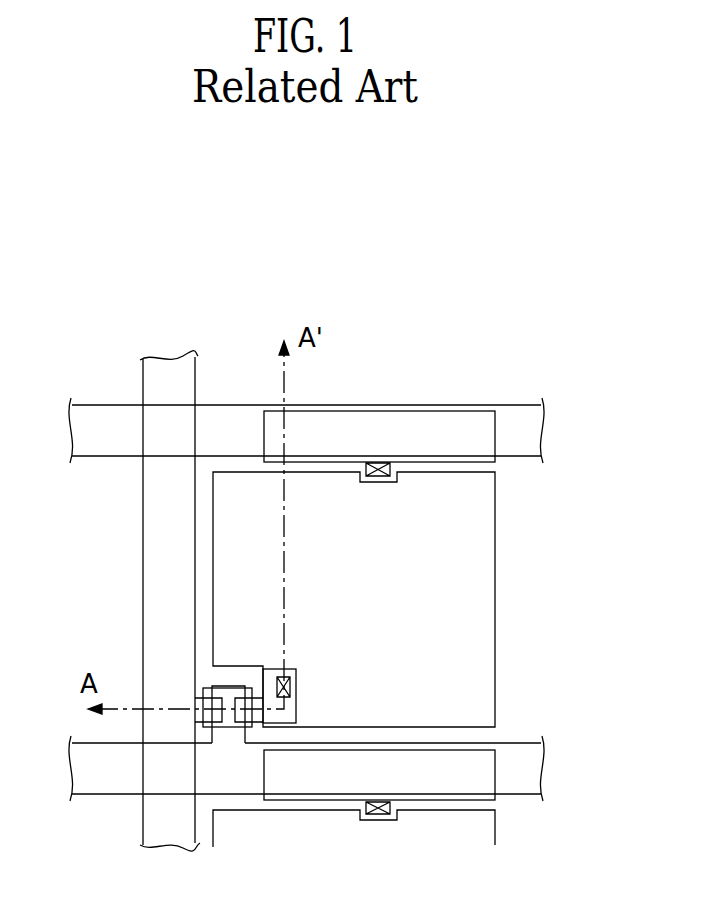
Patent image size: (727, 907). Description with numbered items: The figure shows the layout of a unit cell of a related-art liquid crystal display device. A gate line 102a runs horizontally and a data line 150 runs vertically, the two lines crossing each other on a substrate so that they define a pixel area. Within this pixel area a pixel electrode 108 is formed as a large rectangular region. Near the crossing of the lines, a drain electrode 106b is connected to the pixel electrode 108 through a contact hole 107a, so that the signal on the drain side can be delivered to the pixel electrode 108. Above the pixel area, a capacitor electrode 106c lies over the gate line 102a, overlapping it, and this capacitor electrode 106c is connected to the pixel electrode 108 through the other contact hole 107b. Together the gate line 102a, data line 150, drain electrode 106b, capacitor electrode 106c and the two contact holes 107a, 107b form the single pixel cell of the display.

The gate line 102a is at (99, 412).
The data line 150 is at (178, 358).
The capacitor electrode 106c is at (442, 420).
The pixel electrode 108 is at (487, 600).
The contact hole 107b is at (377, 480).
The drain electrode 106b is at (292, 708).
The contact hole 107a is at (292, 684).